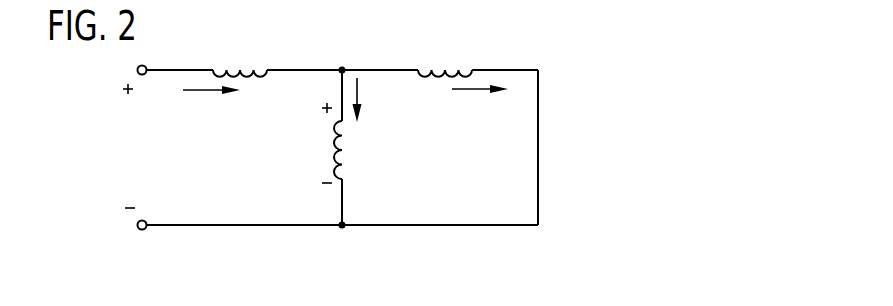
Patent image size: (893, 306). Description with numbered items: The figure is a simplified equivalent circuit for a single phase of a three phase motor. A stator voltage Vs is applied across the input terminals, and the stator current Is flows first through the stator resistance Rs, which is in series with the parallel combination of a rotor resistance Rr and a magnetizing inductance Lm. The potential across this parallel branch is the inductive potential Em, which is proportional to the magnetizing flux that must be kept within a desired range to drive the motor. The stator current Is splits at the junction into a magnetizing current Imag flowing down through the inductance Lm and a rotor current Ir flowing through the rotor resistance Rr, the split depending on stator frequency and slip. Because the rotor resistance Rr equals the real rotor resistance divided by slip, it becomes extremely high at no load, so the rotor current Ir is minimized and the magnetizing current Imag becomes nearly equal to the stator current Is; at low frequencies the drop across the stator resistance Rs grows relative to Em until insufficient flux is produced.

The stator resistance Rs is at (240, 59).
The rotor resistance Rr is at (473, 52).
The magnetizing inductance Lm is at (353, 150).
The inductive potential drop Em is at (317, 143).
The stator voltage Vs is at (123, 146).
The stator current Is is at (211, 102).
The rotor current Ir is at (480, 102).
The magnetizing current Imag is at (383, 100).